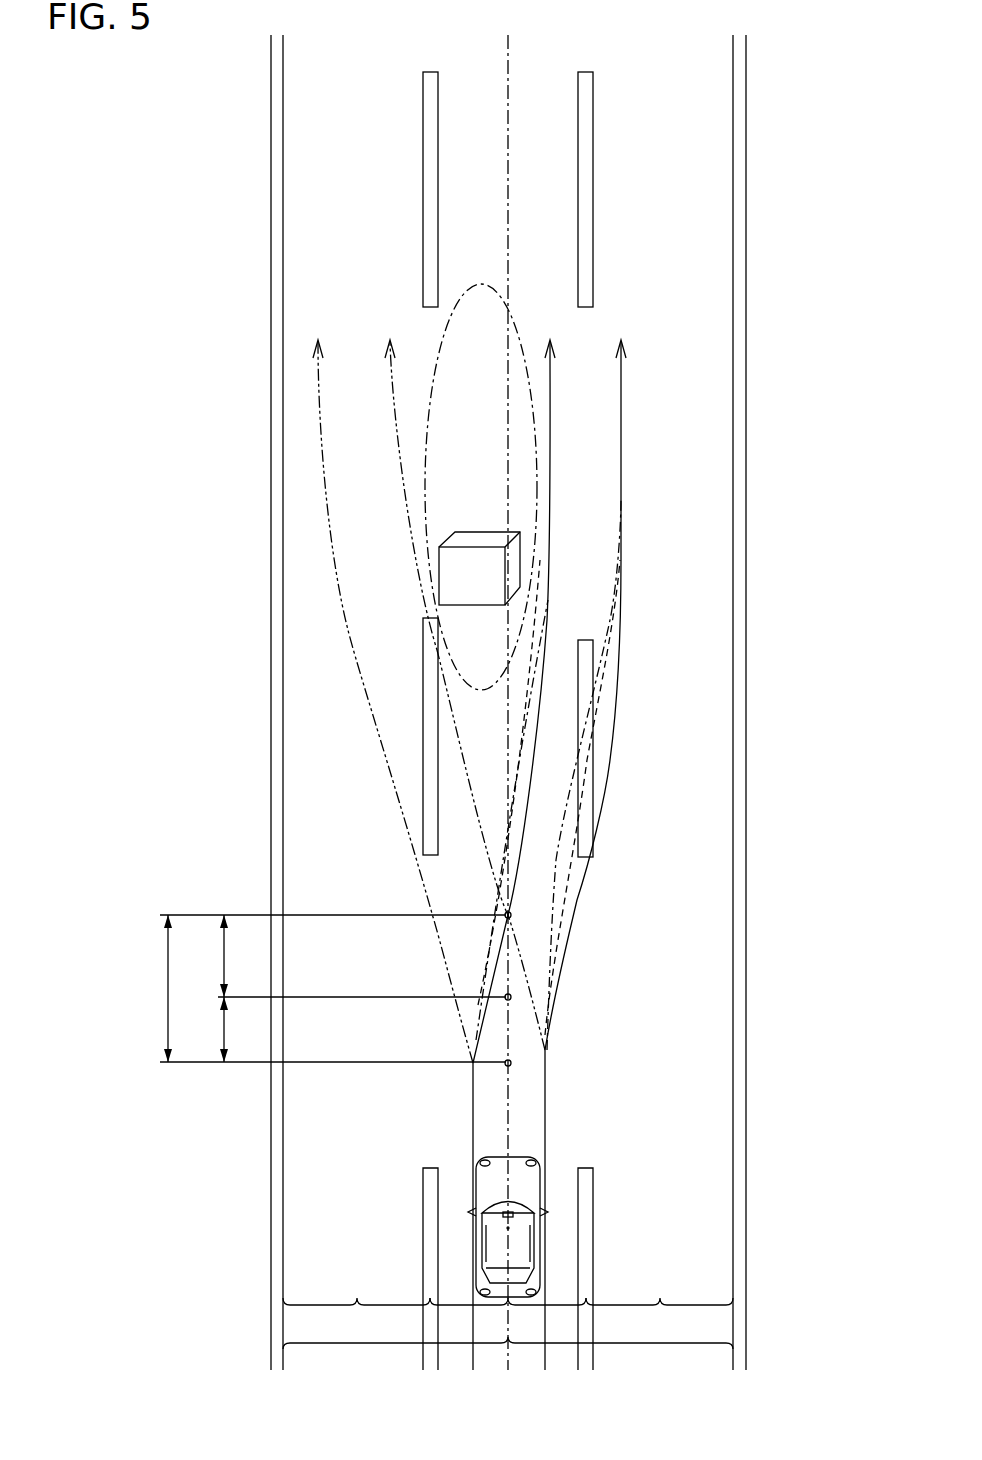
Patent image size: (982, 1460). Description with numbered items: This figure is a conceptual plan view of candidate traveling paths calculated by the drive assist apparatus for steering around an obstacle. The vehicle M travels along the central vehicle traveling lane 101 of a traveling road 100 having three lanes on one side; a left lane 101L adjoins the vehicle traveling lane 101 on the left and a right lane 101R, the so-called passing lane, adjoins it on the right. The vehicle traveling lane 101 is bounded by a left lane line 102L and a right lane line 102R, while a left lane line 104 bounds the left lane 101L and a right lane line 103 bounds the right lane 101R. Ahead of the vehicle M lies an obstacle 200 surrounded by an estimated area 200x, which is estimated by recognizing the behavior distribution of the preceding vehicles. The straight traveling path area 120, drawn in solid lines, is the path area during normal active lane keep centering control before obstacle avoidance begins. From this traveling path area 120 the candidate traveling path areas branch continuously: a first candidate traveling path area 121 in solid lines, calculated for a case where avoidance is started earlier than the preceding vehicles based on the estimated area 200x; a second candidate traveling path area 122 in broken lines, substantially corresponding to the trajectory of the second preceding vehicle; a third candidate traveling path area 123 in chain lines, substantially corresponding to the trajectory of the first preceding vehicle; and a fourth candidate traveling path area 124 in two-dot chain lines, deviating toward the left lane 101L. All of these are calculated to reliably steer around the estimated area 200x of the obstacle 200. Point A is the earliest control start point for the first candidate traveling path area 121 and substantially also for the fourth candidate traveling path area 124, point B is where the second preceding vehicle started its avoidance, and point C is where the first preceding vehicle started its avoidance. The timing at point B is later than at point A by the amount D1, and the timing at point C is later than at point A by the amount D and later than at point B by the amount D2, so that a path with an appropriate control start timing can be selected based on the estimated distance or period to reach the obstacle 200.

The traveling road 100 is at (508, 1354).
The left lane 101L is at (356, 1320).
The vehicle traveling lane 101 is at (508, 1320).
The right lane 101R is at (659, 1320).
The left lane line 102L is at (430, 1265).
The right lane line 102R is at (586, 1265).
The right lane line 103 is at (737, 1201).
The left lane line 104 is at (275, 1201).
The traveling path area 120 is at (548, 1128).
The first candidate traveling path area 121 is at (607, 788).
The second candidate traveling path area 122 is at (588, 836).
The third candidate traveling path area 123 is at (556, 870).
The fourth candidate traveling path area 124 is at (357, 662).
The obstacle 200 is at (457, 572).
The estimated area 200x is at (420, 494).
The vehicle M is at (540, 1236).
The control start point A is at (505, 1065).
The control start point B is at (505, 999).
The control start point C is at (505, 917).
The timing difference D is at (159, 988).
The timing difference D1 is at (208, 1029).
The timing difference D2 is at (208, 956).